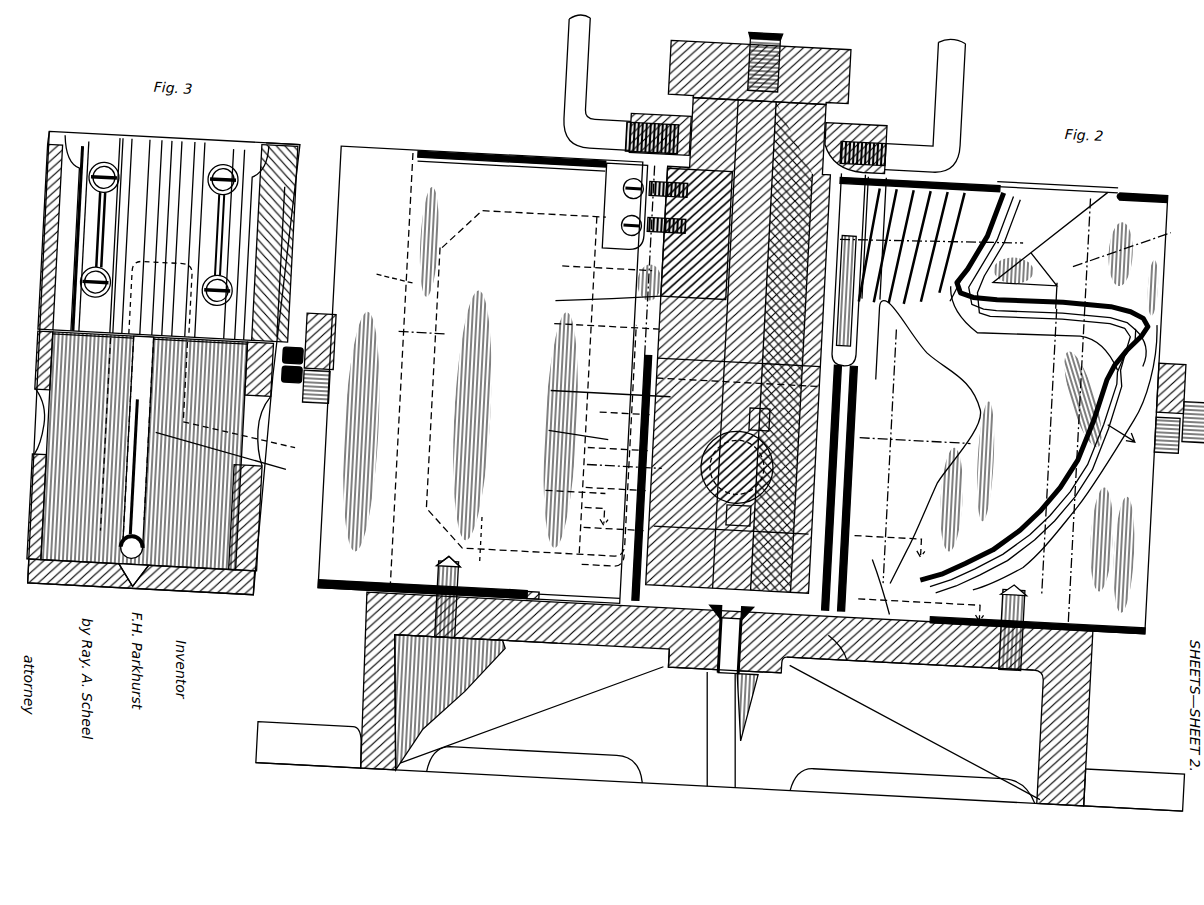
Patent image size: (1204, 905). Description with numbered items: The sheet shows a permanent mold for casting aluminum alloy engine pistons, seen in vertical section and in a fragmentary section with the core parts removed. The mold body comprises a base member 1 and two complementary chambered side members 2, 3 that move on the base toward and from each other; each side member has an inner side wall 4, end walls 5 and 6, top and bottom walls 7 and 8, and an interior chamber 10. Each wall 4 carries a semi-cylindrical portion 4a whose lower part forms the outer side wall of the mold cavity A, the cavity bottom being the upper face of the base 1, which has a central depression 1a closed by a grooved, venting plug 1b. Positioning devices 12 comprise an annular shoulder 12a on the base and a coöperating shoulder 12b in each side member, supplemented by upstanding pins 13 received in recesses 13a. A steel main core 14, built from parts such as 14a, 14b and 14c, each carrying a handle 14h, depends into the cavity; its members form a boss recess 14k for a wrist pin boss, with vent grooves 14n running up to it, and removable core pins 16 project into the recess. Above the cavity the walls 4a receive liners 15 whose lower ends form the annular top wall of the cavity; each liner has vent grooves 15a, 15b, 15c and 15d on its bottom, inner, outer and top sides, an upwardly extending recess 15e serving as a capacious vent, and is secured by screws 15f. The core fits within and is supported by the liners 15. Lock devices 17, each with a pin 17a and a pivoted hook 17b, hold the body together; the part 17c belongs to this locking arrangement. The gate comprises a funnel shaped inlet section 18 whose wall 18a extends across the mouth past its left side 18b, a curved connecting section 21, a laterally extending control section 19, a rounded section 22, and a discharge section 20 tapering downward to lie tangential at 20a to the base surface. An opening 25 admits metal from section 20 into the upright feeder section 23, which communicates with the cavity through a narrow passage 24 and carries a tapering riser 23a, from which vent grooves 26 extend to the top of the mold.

In FIG. 3, the base member 1 is at (258, 589).
In FIG. 2, the base member 1 is at (875, 650).
In FIG. 3, the central depression 1a is at (160, 585).
In FIG. 2, the central depression 1a is at (825, 645).
In FIG. 2, the plug 1b is at (716, 696).
In FIG. 3, the chambered side member 2 is at (82, 560).
In FIG. 2, the chambered side member 2 is at (517, 376).
In FIG. 3, the chambered side member 3 is at (262, 507).
In FIG. 2, the chambered side member 3 is at (762, 624).
In FIG. 2, the inner side wall 4 is at (976, 604).
In FIG. 3, the semi-cylindrical portion 4a is at (262, 537).
In FIG. 2, the semi-cylindrical portion 4a is at (593, 395).
In FIG. 2, the end wall 5 is at (886, 408).
In FIG. 2, the end wall 6 is at (966, 442).
In FIG. 2, the top wall 7 is at (944, 596).
In FIG. 2, the bottom wall 8 is at (809, 494).
In FIG. 2, the interior chamber 10 is at (411, 328).
In FIG. 2, the positioning devices 12 is at (538, 602).
In FIG. 2, the annular shoulder 12a is at (545, 640).
In FIG. 2, the coöperating shoulder 12b is at (528, 602).
In FIG. 2, the upstanding pin 13 is at (437, 592).
In FIG. 2, the recess 13a is at (445, 572).
In FIG. 2, the main core 14 is at (645, 648).
In FIG. 2, the core part 14a is at (628, 118).
In FIG. 2, the core part 14b is at (824, 58).
In FIG. 2, the core part 14c is at (852, 118).
In FIG. 2, the handle 14h is at (540, 66).
In FIG. 2, the boss recess 14k is at (557, 486).
In FIG. 2, the vent groove 14n is at (682, 672).
In FIG. 3, the liner 15 is at (100, 150).
In FIG. 2, the liner 15 is at (640, 262).
In FIG. 3, the vent groove 15a is at (184, 324).
In FIG. 2, the vent groove 15a is at (590, 324).
In FIG. 3, the vent groove 15b is at (113, 226).
In FIG. 2, the vent groove 15b is at (593, 301).
In FIG. 3, the vent groove 15c is at (286, 178).
In FIG. 2, the vent groove 15c is at (592, 266).
In FIG. 3, the vent groove 15d is at (62, 140).
In FIG. 2, the vent groove 15d is at (832, 172).
In FIG. 3, the upwardly extending recess 15e is at (290, 140).
In FIG. 3, the screw 15f is at (214, 165).
In FIG. 2, the removable core pin 16 is at (563, 428).
In FIG. 3, the lock device 17 is at (293, 352).
In FIG. 2, the lock device 17 is at (1193, 409).
In FIG. 3, the pin 17a is at (295, 378).
In FIG. 2, the pin 17a is at (1160, 432).
In FIG. 3, the pivoted hook 17b is at (320, 305).
In FIG. 2, the screw block 17c is at (1165, 340).
In FIG. 2, the inlet section 18 is at (993, 389).
In FIG. 2, the inlet wall 18a is at (1062, 204).
In FIG. 2, the left side of mouth 18b is at (984, 178).
In FIG. 2, the control section 19 is at (1016, 320).
In FIG. 2, the discharge section 20 is at (1035, 514).
In FIG. 3, the tangential point 20a is at (200, 584).
In FIG. 2, the tangential point 20a is at (876, 586).
In FIG. 2, the curved connecting section 21 is at (950, 304).
In FIG. 2, the curved section 22 is at (1130, 300).
In FIG. 3, the feeder section 23 is at (249, 438).
In FIG. 2, the feeder section 23 is at (914, 455).
In FIG. 2, the riser 23a is at (925, 443).
In FIG. 3, the passage 24 is at (228, 452).
In FIG. 2, the passage 24 is at (845, 463).
In FIG. 2, the opening 25 is at (900, 625).
In FIG. 2, the vent grooves 26 is at (920, 182).
In FIG. 2, the mold cavity A is at (624, 466).